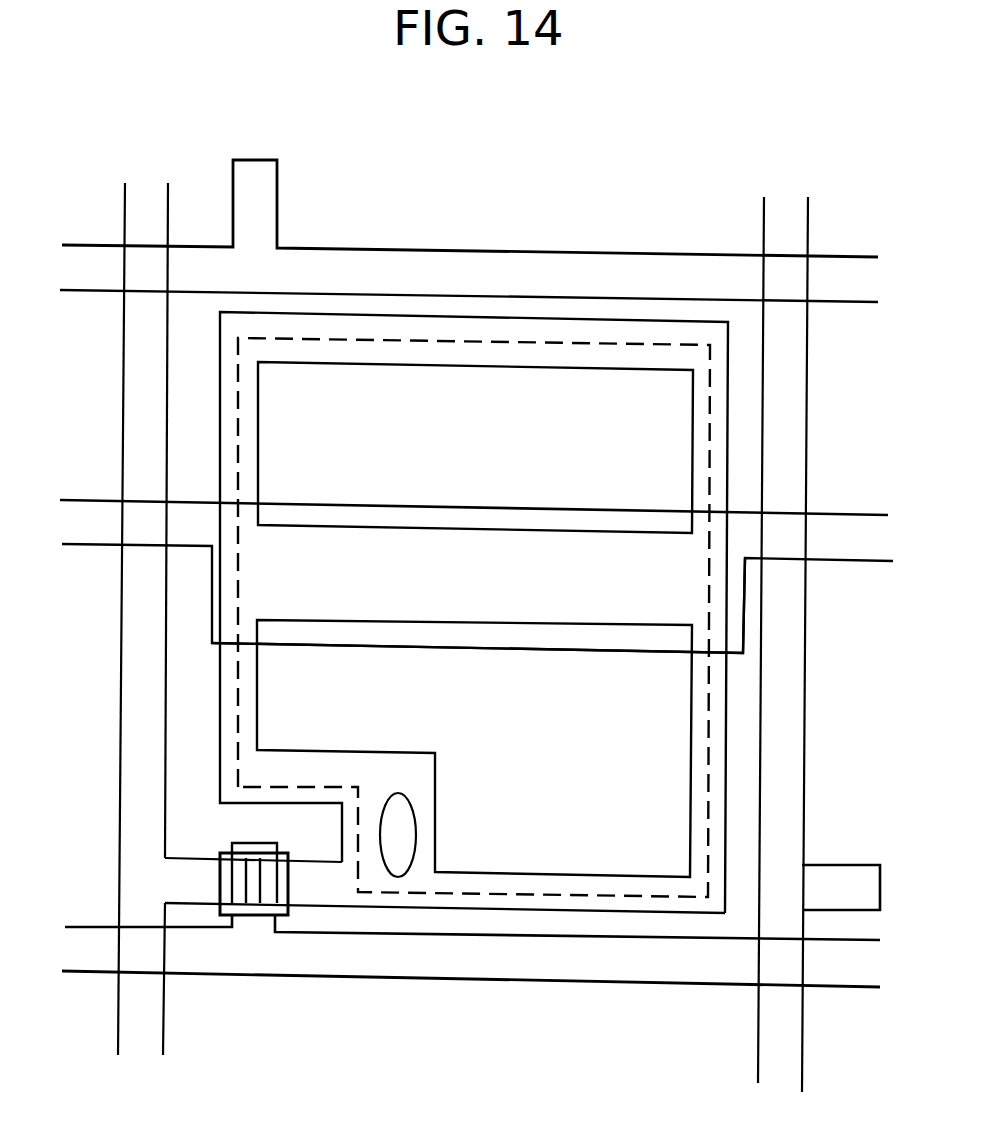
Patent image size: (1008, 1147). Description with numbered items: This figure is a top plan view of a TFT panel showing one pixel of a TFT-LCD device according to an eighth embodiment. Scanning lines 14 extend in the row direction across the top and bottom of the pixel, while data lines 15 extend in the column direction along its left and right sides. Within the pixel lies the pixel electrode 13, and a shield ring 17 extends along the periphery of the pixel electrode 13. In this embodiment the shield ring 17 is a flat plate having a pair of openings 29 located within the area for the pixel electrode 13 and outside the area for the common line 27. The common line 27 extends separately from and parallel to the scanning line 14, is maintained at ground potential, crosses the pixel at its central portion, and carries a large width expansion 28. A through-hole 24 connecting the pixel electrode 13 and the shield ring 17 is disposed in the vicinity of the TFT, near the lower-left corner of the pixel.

The pixel electrode 13 is at (708, 770).
The scanning line 14 is at (686, 255).
The data line 15 is at (125, 216).
The shield ring 17 is at (728, 470).
The through-hole 24 is at (398, 877).
The common line 27 is at (848, 562).
The large width expansion 28 is at (745, 640).
The opening 29 is at (530, 369).